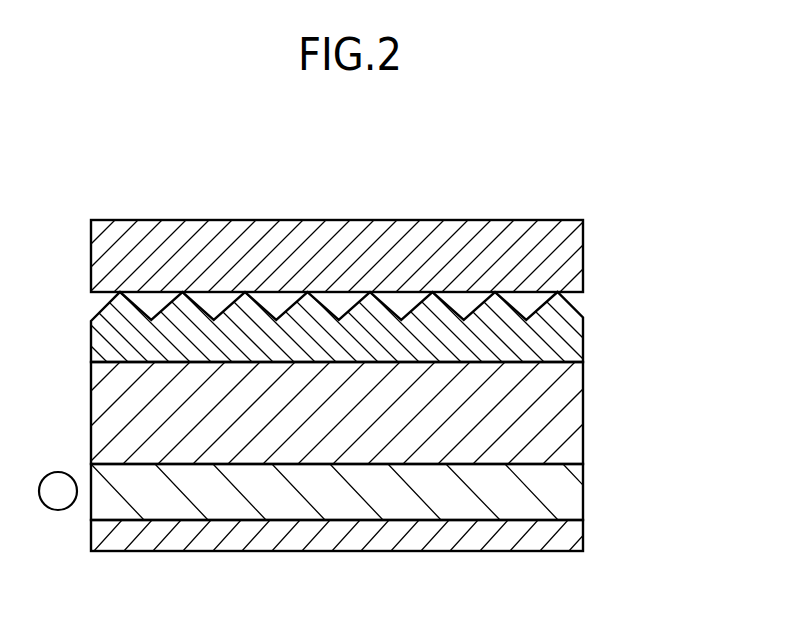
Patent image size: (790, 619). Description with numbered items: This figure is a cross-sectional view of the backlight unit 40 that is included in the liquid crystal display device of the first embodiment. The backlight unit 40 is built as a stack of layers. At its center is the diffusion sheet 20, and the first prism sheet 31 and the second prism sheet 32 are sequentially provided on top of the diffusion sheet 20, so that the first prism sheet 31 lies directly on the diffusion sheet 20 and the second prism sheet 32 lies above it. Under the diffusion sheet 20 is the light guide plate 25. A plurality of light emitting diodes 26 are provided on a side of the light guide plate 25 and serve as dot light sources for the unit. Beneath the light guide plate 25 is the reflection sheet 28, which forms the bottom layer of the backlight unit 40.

The backlight unit 40 is at (117, 163).
The second prism sheet 32 is at (582, 262).
The first prism sheet 31 is at (580, 343).
The diffusion sheet 20 is at (582, 412).
The light guide plate 25 is at (582, 495).
The reflection sheet 28 is at (582, 543).
The light emitting diodes 26 is at (59, 500).